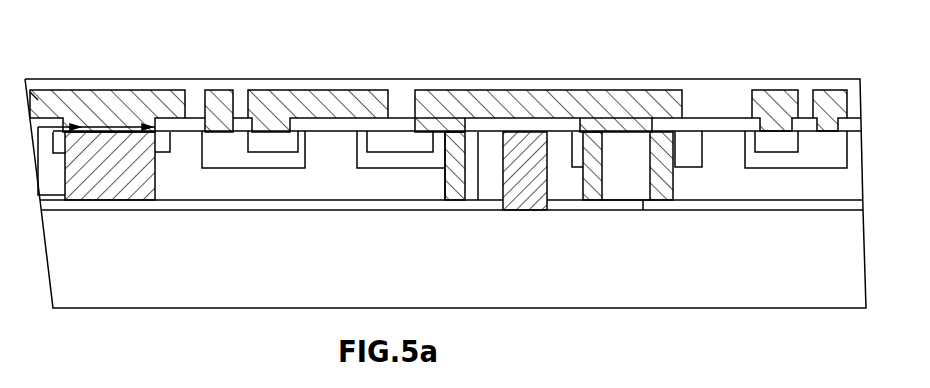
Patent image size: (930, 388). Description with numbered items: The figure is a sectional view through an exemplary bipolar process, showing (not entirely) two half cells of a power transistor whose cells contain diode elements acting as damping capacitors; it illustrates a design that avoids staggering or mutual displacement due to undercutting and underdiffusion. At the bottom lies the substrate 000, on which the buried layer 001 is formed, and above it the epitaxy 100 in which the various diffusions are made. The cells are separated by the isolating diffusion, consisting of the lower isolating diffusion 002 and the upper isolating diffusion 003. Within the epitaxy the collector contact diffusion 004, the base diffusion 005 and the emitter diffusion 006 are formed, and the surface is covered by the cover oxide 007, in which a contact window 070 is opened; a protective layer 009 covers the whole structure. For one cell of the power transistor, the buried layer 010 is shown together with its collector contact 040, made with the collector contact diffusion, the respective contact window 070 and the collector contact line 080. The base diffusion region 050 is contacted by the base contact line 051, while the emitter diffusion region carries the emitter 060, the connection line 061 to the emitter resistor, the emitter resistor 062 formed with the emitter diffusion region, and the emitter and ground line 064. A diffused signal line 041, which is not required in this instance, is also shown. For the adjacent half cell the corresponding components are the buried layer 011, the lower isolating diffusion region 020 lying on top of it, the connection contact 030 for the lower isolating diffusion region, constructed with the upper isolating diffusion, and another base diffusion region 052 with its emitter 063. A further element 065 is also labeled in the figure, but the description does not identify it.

The substrate 000 is at (843, 297).
The buried layer 001 is at (182, 208).
The lower isolating diffusion 002 is at (450, 180).
The upper isolating diffusion 003 is at (445, 135).
The collector contact diffusion 004 is at (118, 188).
The base diffusion 005 is at (225, 158).
The emitter diffusion 006 is at (167, 150).
The cover oxide 007 is at (718, 122).
The protective layer 009 is at (633, 80).
The buried layer of a cell of the power transistor 010 is at (62, 203).
The buried layer 011 is at (768, 202).
The lower isolating diffusion region 020 is at (643, 185).
The connection contact 030 is at (672, 148).
The collector contact 040 is at (83, 172).
The diffused signal line 041 is at (517, 150).
The base diffusion region 050 is at (230, 148).
The base contact line 051 is at (219, 150).
The base diffusion region 052 is at (812, 147).
The emitter 060 is at (280, 147).
The connection line to the emitter resistor 061 is at (333, 108).
The emitter resistor 062 is at (407, 150).
The emitter 063 is at (770, 142).
The emitter and ground line 064 is at (447, 148).
The insulating film 065 is at (160, 152).
The contact window 070 is at (131, 127).
The collector contact line 080 is at (34, 96).
The epitaxy 100 is at (347, 180).